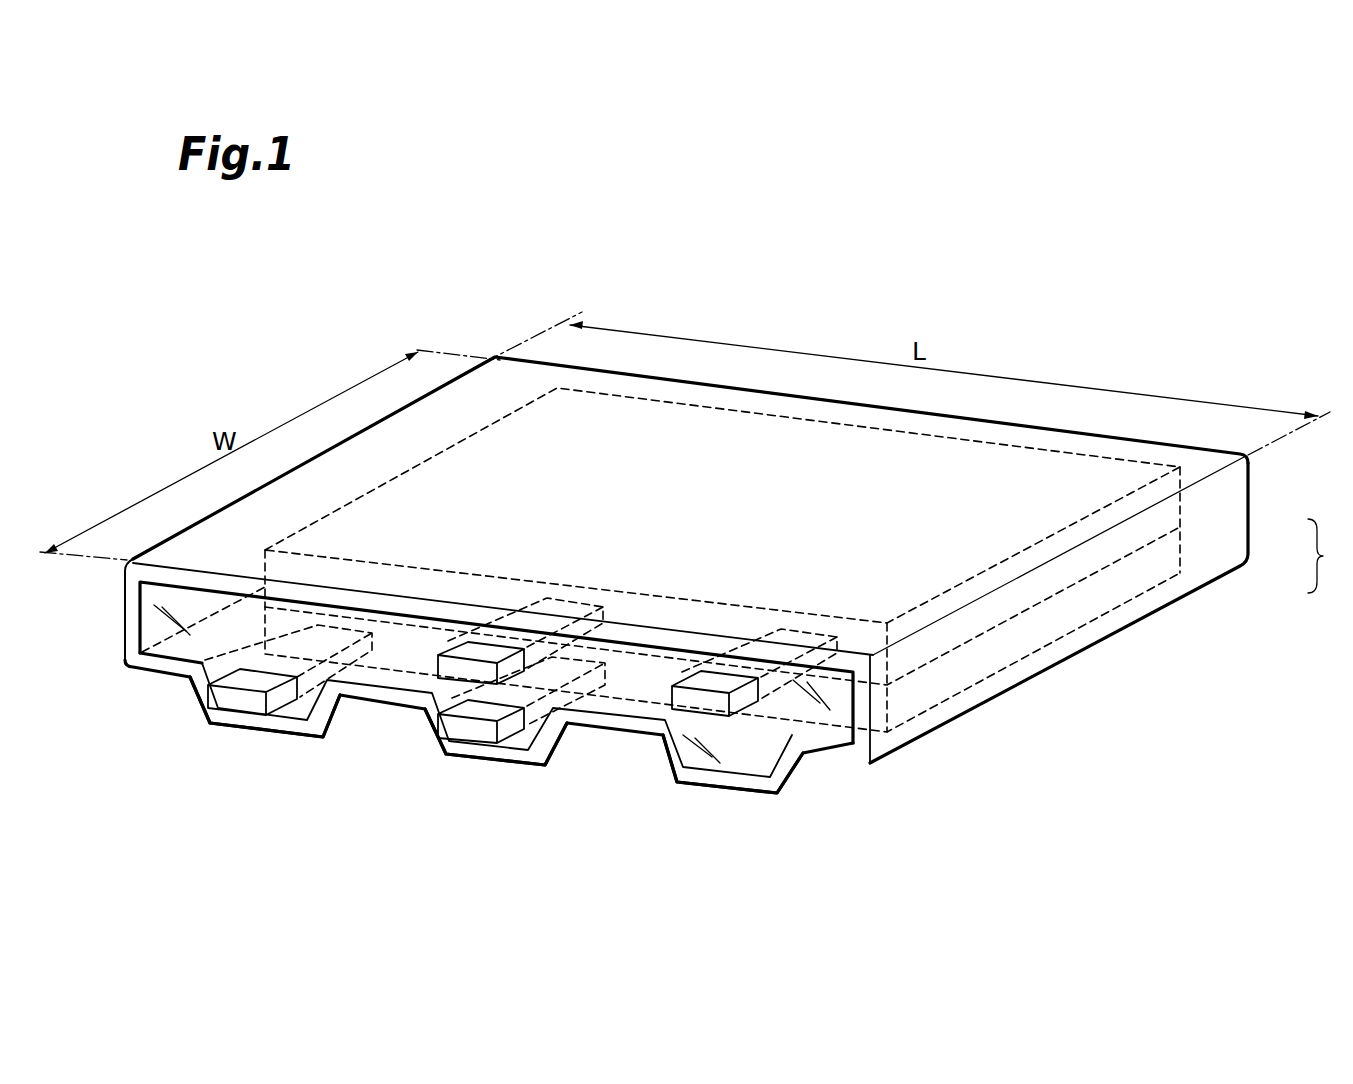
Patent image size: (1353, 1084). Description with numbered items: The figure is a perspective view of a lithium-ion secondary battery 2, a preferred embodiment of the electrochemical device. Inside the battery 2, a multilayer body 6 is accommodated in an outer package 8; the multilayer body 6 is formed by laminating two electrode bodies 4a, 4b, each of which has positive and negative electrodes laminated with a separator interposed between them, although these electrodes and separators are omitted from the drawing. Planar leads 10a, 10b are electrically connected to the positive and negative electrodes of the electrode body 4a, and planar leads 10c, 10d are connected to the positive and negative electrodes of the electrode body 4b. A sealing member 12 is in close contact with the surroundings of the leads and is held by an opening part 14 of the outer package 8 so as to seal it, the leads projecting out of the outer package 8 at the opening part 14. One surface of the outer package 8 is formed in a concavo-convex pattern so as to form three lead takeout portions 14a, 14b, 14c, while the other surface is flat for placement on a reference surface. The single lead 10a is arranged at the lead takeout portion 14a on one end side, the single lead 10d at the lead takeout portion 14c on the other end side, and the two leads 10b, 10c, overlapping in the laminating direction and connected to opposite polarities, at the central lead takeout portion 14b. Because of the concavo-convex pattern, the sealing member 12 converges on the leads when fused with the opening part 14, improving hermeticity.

The battery 2 is at (441, 279).
The electrode body 4a is at (1168, 540).
The electrode body 4b is at (1168, 500).
The multilayer body 6 is at (1323, 556).
The outer package 8 is at (1250, 488).
The planar lead 10a is at (234, 694).
The planar lead 10b is at (466, 726).
The planar lead 10c is at (472, 668).
The planar lead 10d is at (700, 696).
The sealing member 12 is at (247, 624).
The opening part 14 is at (176, 588).
The lead takeout portion 14a is at (283, 712).
The lead takeout portion 14b is at (519, 742).
The lead takeout portion 14c is at (744, 770).